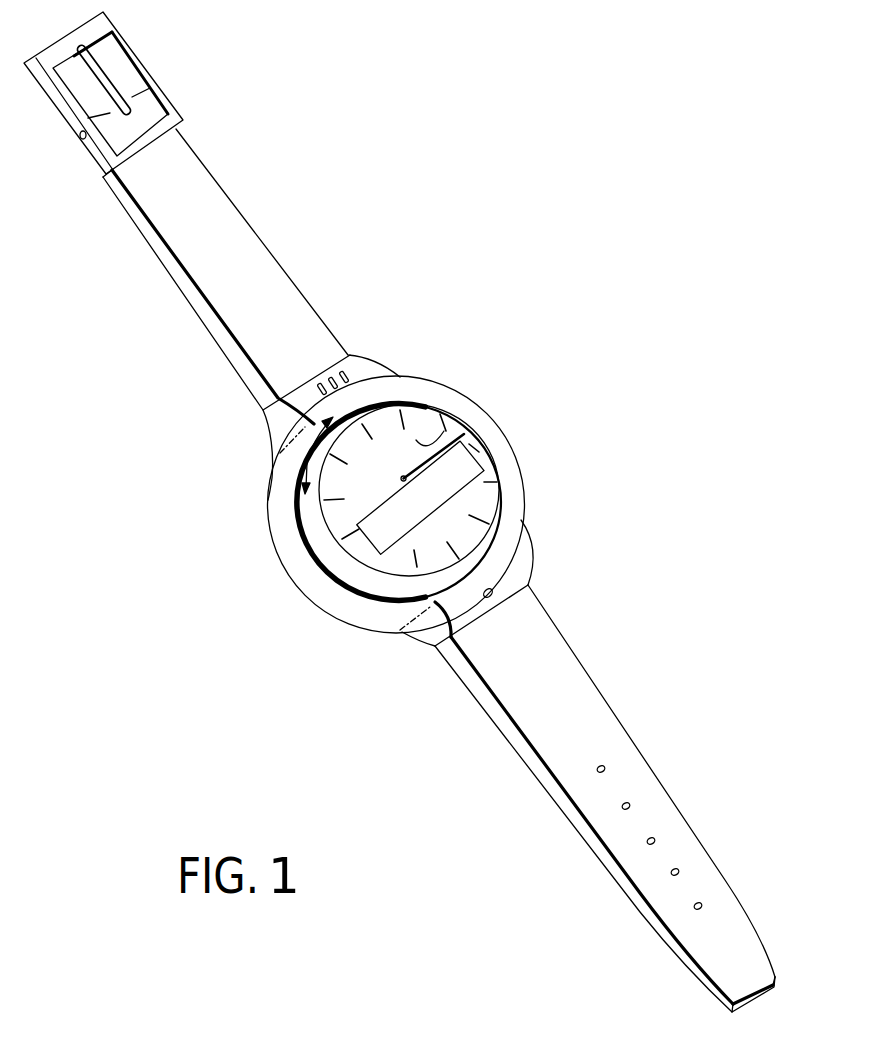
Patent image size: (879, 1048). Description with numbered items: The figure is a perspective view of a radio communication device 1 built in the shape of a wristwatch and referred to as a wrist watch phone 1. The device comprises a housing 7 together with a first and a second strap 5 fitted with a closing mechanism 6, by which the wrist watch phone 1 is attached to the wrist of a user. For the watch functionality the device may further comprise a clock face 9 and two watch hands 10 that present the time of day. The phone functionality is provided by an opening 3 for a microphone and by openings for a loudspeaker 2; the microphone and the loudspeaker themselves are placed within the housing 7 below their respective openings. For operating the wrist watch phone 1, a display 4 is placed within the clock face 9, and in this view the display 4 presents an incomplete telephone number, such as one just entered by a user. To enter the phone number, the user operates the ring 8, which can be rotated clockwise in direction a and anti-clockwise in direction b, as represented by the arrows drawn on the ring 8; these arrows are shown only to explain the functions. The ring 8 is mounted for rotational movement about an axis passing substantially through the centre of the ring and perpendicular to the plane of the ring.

The radio communication device 1 is at (440, 218).
The openings for a loudspeaker 2 is at (341, 377).
The opening for a microphone 3 is at (492, 589).
The display 4 is at (378, 537).
The first and second strap 5 is at (257, 272).
The closing mechanism 6 is at (140, 73).
The housing 7 is at (310, 575).
The ring 8 is at (317, 537).
The clock face 9 is at (404, 478).
The watch hands 10 is at (464, 434).